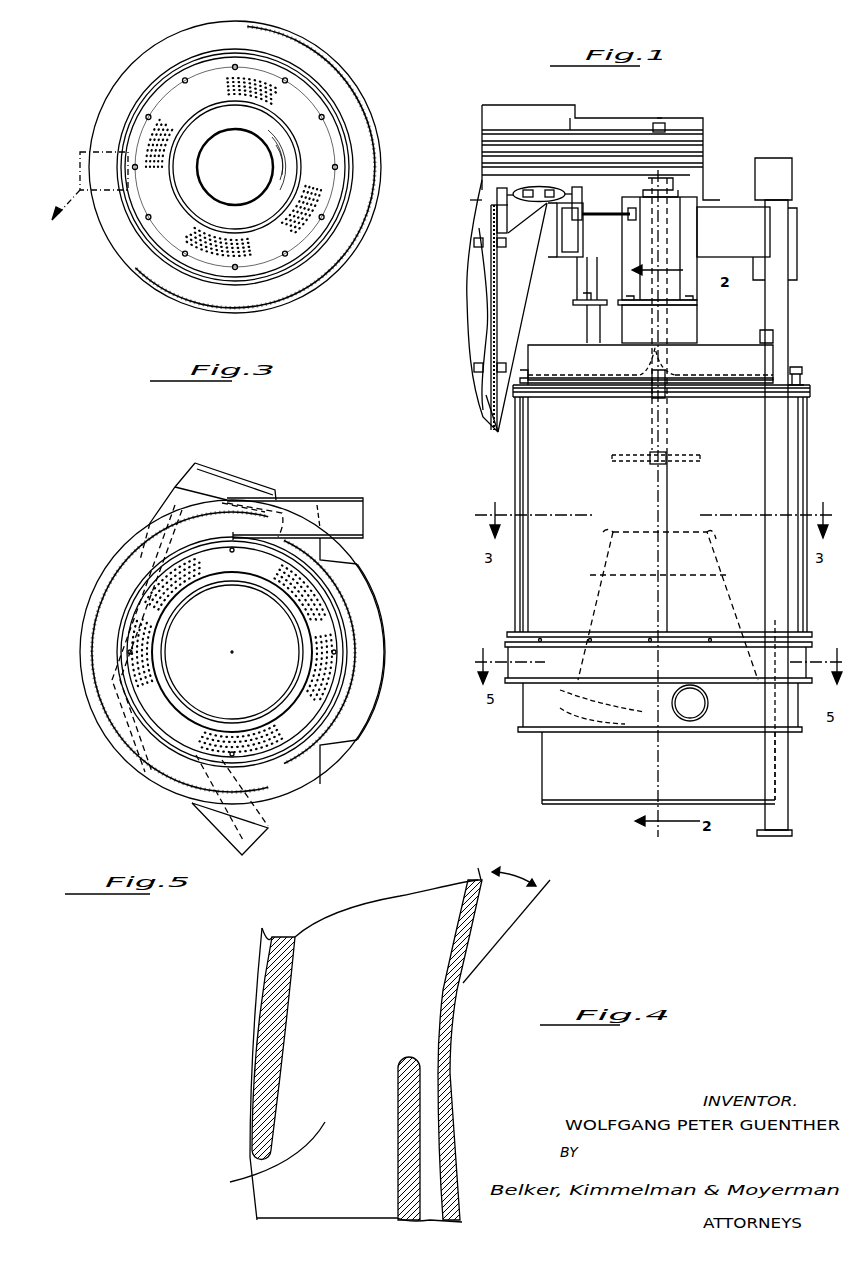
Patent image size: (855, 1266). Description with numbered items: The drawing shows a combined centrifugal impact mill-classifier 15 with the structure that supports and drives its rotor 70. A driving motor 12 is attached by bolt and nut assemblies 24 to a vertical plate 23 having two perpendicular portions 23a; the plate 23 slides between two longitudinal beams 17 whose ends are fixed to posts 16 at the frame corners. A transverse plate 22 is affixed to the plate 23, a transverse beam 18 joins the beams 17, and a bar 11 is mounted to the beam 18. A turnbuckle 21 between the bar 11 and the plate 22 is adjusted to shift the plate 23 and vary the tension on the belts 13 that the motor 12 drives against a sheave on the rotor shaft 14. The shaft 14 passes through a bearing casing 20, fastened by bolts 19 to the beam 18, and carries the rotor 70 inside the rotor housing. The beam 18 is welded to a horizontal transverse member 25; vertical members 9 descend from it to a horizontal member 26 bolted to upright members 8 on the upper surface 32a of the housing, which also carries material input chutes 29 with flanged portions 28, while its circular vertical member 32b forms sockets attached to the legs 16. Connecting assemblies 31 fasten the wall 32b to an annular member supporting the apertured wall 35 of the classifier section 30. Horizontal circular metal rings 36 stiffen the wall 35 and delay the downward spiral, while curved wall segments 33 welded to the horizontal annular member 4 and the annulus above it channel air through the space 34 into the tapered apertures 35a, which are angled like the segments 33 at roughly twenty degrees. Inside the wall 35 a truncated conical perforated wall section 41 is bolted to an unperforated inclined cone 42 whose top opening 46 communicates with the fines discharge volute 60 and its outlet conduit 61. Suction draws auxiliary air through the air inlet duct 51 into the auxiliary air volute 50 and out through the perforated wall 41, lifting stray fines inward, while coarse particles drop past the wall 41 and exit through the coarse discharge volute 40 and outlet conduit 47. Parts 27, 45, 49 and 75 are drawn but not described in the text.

In FIG. 3, the horizontal annular member 4 is at (118, 248).
In FIG. 1, the upright members 8 is at (590, 322).
In FIG. 1, the vertical members 9 is at (586, 309).
In FIG. 1, the bar 11 is at (580, 194).
In FIG. 1, the driving motor 12 is at (470, 356).
In FIG. 1, the belts 13 is at (596, 147).
In FIG. 1, the rotor shaft 14 is at (664, 124).
In FIG. 1, the combined centrifugal impact mill-classifier 15 is at (505, 455).
In FIG. 1, the posts 16 is at (785, 290).
In FIG. 1, the longitudinal beams 17 is at (733, 210).
In FIG. 1, the transverse beam 18 is at (567, 256).
In FIG. 1, the bolts 19 is at (610, 212).
In FIG. 1, the bearing casing 20 is at (697, 230).
In FIG. 1, the turnbuckle 21 is at (537, 203).
In FIG. 1, the transverse plate 22 is at (497, 194).
In FIG. 1, the vertical plate 23 is at (491, 280).
In FIG. 1, the perpendicular portions 23a is at (505, 305).
In FIG. 1, the bolt and nut assemblies 24 is at (505, 248).
In FIG. 1, the horizontal transverse member 25 is at (583, 284).
In FIG. 1, the horizontal member 26 is at (590, 308).
In FIG. 1, the stud 27 is at (605, 310).
In FIG. 1, the flanged portions 28 is at (697, 303).
In FIG. 1, the material input chutes 29 is at (697, 330).
In FIG. 3, the classifier section 30 is at (158, 272).
In FIG. 1, the classifier section 30 is at (515, 480).
In FIG. 1, the connecting assemblies 31 is at (832, 369).
In FIG. 1, the upper surface 32a is at (606, 338).
In FIG. 1, the circular vertical member 32b is at (750, 363).
In FIG. 3, the curved wall segments 33 is at (338, 103).
In FIG. 1, the curved wall segments 33 is at (545, 581).
In FIG. 4, the curved wall segments 33 is at (270, 1015).
In FIG. 3, the space 34 is at (243, 296).
In FIG. 4, the space 34 is at (230, 1182).
In FIG. 3, the apertured wall 35 is at (338, 214).
In FIG. 4, the apertured wall 35 is at (443, 1076).
In FIG. 4, the apertures 35a is at (442, 1018).
In FIG. 3, the horizontal circular metal rings 36 is at (333, 118).
In FIG. 1, the coarse discharge volute 40 is at (518, 650).
In FIG. 5, the coarse discharge volute 40 is at (93, 606).
In FIG. 3, the truncated conical perforated wall section 41 is at (290, 236).
In FIG. 1, the truncated conical perforated wall section 41 is at (580, 617).
In FIG. 5, the truncated conical perforated wall section 41 is at (152, 594).
In FIG. 3, the unperforated inclined wall portion 42 is at (222, 118).
In FIG. 1, the unperforated inclined wall portion 42 is at (603, 554).
In FIG. 5, the unperforated inclined wall portion 42 is at (278, 610).
In FIG. 5, the ring 45 is at (338, 680).
In FIG. 3, the opening 46 is at (246, 168).
In FIG. 1, the opening 46 is at (675, 528).
In FIG. 5, the outlet conduit 47 is at (339, 512).
In FIG. 5, the casing wall 49 is at (92, 664).
In FIG. 1, the auxiliary air volute 50 is at (538, 712).
In FIG. 5, the auxiliary air volute 50 is at (96, 697).
In FIG. 1, the air inlet duct 51 is at (683, 710).
In FIG. 5, the air inlet duct 51 is at (223, 818).
In FIG. 1, the fines discharge volute 60 is at (565, 770).
In FIG. 5, the fines discharge volute 60 is at (345, 713).
In FIG. 5, the outlet conduit 61 is at (183, 483).
In FIG. 1, the rotor 70 is at (703, 372).
In FIG. 1, the agitator 75 is at (691, 450).